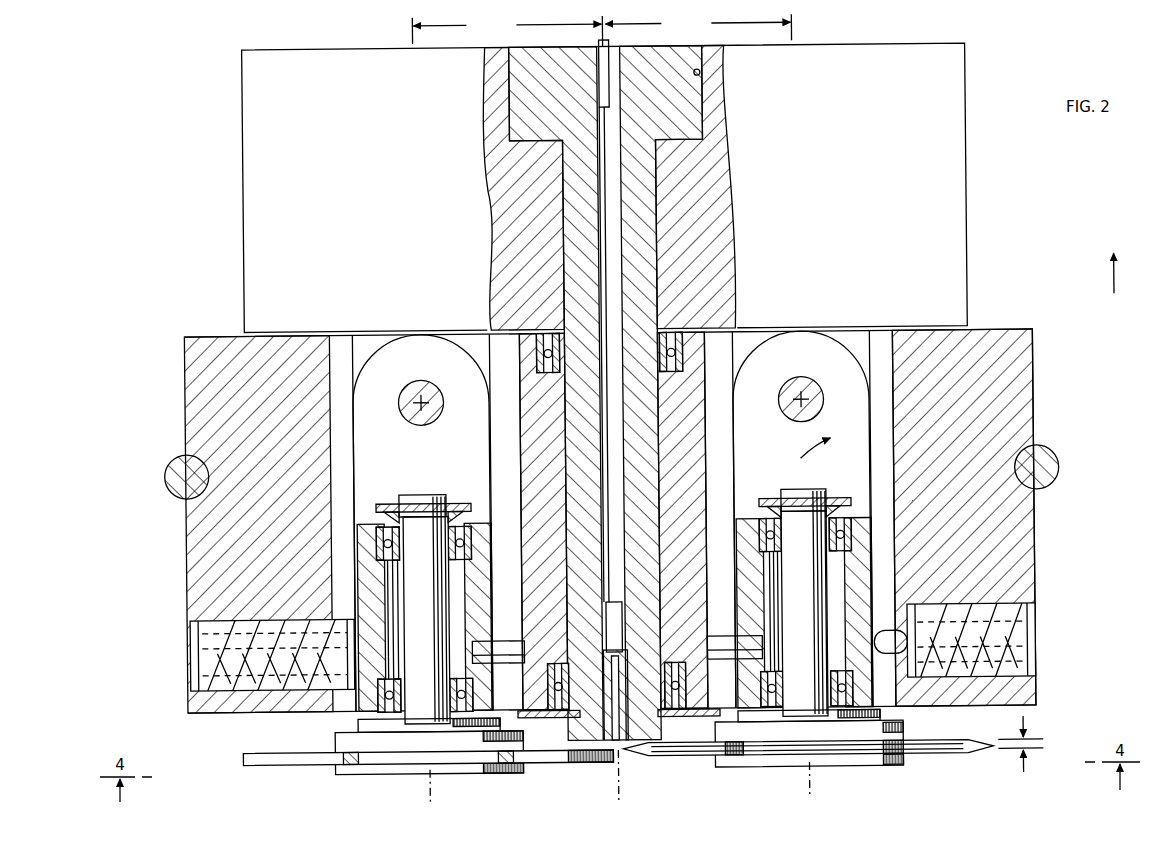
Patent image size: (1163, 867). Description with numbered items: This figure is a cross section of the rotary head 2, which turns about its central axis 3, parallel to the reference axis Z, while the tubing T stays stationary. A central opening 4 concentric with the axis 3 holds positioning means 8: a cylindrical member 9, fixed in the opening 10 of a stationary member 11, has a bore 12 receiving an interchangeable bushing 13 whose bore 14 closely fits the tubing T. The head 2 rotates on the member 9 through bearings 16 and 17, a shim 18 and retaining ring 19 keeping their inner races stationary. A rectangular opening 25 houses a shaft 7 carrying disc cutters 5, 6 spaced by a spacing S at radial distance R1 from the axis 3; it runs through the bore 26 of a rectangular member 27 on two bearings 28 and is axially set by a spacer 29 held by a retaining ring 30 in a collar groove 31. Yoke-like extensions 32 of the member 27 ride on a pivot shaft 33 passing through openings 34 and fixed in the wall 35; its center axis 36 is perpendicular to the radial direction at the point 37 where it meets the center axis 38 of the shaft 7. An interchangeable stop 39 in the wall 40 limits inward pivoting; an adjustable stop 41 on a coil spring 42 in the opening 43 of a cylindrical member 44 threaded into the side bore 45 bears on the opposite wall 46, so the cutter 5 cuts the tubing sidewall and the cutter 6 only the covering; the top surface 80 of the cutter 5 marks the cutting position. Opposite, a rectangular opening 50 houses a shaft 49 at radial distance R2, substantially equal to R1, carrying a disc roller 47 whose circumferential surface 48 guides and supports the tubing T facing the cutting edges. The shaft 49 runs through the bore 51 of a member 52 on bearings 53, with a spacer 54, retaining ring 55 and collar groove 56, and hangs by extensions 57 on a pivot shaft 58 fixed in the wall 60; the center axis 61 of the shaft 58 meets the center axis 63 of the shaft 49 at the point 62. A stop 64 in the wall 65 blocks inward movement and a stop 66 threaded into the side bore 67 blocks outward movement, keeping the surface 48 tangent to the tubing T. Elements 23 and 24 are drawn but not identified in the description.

The head 2 is at (1035, 393).
The central axis 3 is at (617, 786).
The opening 4 is at (660, 421).
The first disc cutter 5 is at (942, 743).
The second disc cutter 6 is at (978, 757).
The shaft 7 is at (788, 573).
The positioning means 8 is at (651, 47).
The cylindrical shaped member 9 is at (648, 178).
The opening 10 is at (703, 73).
The stationary member 11 is at (968, 256).
The bore 12 is at (616, 222).
The bushing member 13 is at (605, 726).
The bore 14 is at (648, 734).
The bearing 16 is at (697, 330).
The bearing 17 is at (551, 665).
The shim 18 is at (704, 308).
The retaining ring 19 is at (541, 718).
The bolt 23 is at (172, 462).
The bore 24 is at (1025, 450).
The rectangular opening 25 is at (892, 396).
The bore 26 is at (840, 576).
The rectangular shaped member 27 is at (735, 541).
The bearings 28 is at (856, 522).
The spacer 29 is at (770, 506).
The retaining ring 30 is at (840, 502).
The collar groove 31 is at (803, 496).
The extensions 32 is at (757, 362).
The pivot shaft 33 is at (795, 414).
The openings 34 is at (824, 403).
The wall 35 is at (864, 354).
The center axis 36 is at (814, 394).
The point 37 is at (800, 402).
The center axis 38 is at (808, 784).
The stop 39 is at (724, 660).
The wall 40 is at (737, 606).
The stop 41 is at (887, 634).
The coil spring 42 is at (975, 612).
The opening 43 is at (930, 680).
The cylindrical member 44 is at (946, 612).
The side bore 45 is at (1033, 621).
The wall 46 is at (872, 536).
The roller 47 is at (264, 750).
The circumferential surface 48 is at (283, 758).
The shaft 49 is at (403, 616).
The rectangular opening 50 is at (330, 376).
The bore 51 is at (463, 601).
The rectangular shaped member 52 is at (354, 565).
The bearings 53 is at (378, 537).
The spacer 54 is at (470, 512).
The retaining ring 55 is at (459, 502).
The collar groove 56 is at (419, 497).
The extensions 57 is at (428, 336).
The pivot shaft 58 is at (418, 386).
The wall 60 is at (496, 359).
The center axis 61 is at (440, 402).
The point 62 is at (420, 405).
The center axis 63 is at (428, 790).
The stop 64 is at (501, 662).
The wall 65 is at (490, 611).
The stop 66 is at (274, 622).
The side bore 67 is at (208, 665).
The top surface 80 is at (912, 743).
The radial distance R1 is at (698, 28).
The radial distance R2 is at (507, 32).
The tubing T is at (603, 42).
The spacing S is at (1032, 752).
The reference axis Z is at (1113, 261).